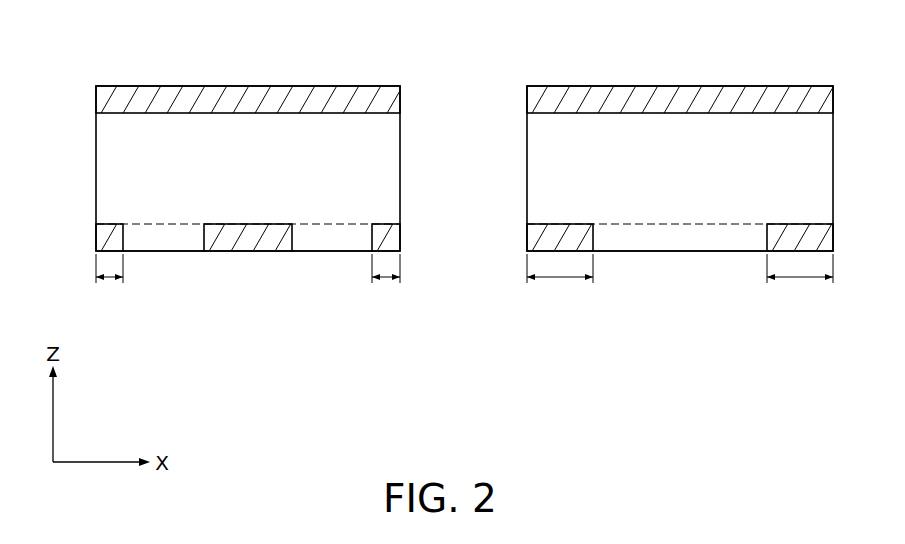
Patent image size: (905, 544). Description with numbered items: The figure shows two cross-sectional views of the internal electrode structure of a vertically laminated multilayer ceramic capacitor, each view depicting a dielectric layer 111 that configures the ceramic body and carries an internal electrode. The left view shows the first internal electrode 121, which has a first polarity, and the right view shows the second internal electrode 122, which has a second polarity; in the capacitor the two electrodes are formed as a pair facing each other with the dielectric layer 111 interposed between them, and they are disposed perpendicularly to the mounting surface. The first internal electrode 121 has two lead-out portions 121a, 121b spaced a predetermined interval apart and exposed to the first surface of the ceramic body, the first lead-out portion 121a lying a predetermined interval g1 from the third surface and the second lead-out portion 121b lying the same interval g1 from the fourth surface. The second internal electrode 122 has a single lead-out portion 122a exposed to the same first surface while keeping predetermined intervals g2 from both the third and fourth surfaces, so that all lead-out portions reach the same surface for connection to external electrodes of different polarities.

The dielectric layer 111 is at (302, 97).
The first internal electrode 121 is at (204, 125).
The first lead-out portion of the first internal electrode 121a is at (175, 240).
The second lead-out portion of the first internal electrode 121b is at (319, 240).
The predetermined interval g1 is at (248, 279).
The second internal electrode 122 is at (636, 125).
The lead-out portion of the second internal electrode 122a is at (682, 240).
The predetermined interval g2 is at (680, 279).